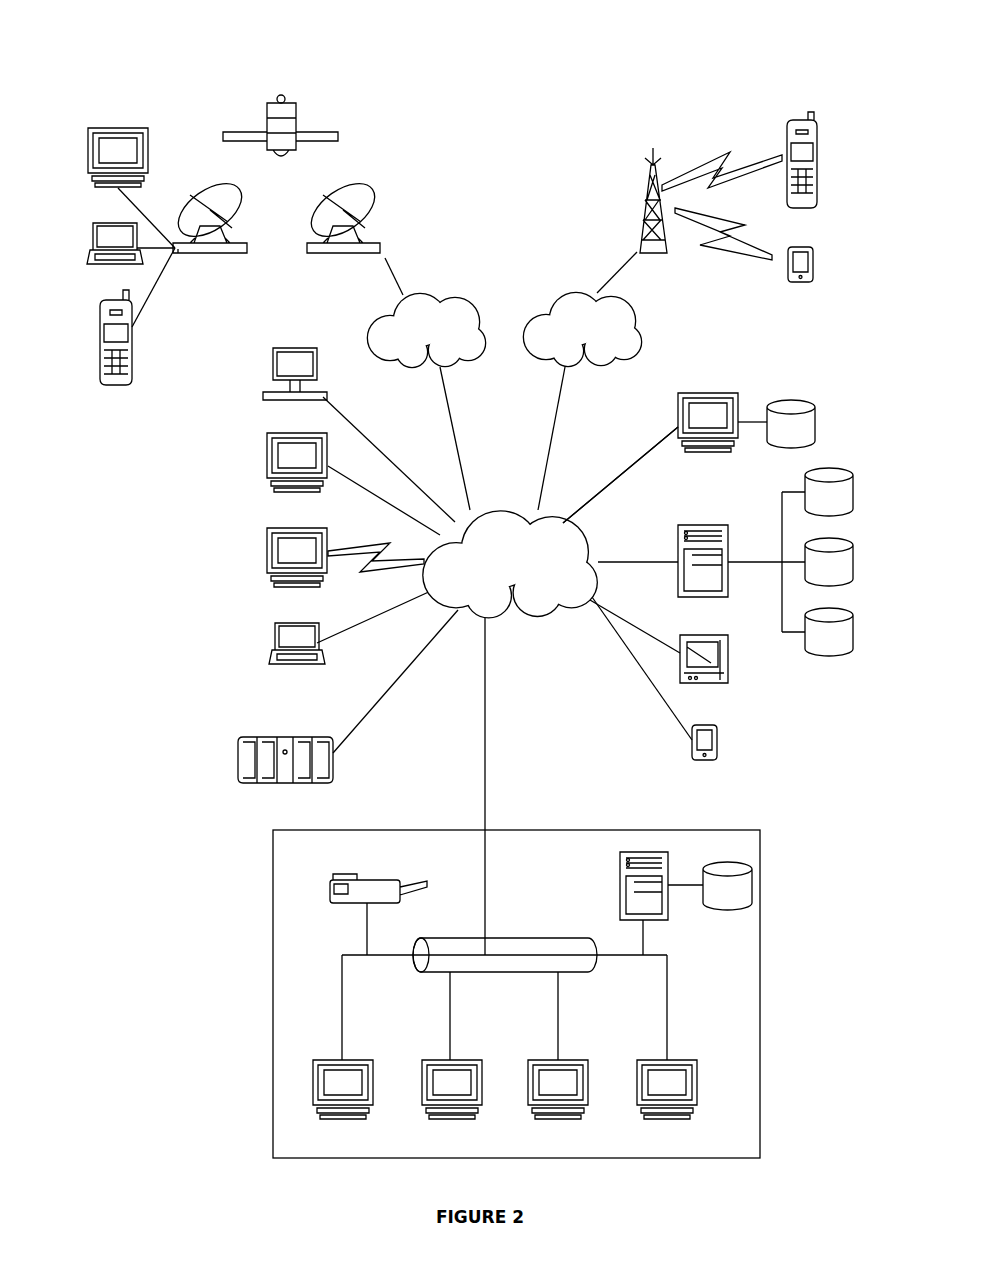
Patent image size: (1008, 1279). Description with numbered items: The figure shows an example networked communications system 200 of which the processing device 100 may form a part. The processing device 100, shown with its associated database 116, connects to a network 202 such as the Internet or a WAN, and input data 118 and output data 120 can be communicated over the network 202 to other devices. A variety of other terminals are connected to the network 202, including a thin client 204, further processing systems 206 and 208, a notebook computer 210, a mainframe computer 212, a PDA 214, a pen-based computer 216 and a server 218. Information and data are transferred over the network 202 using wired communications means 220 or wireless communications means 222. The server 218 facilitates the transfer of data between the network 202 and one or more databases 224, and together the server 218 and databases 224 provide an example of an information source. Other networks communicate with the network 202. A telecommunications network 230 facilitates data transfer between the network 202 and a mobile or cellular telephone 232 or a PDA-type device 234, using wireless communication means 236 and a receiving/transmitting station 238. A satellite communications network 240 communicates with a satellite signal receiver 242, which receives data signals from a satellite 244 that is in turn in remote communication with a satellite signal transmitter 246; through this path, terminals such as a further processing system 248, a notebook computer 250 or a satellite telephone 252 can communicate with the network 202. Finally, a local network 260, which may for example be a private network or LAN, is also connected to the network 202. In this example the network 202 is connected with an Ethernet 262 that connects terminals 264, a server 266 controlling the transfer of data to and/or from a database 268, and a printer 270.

The networked communications system 200 is at (543, 72).
The processing device 100 is at (707, 393).
The database 116 is at (791, 424).
The input data 118 is at (598, 460).
The output data 120 is at (598, 460).
The network 202 is at (504, 676).
The thin client 204 is at (262, 400).
The further processing system 206 is at (267, 470).
The further processing system 208 is at (267, 563).
The notebook computer 210 is at (275, 653).
The mainframe computer 212 is at (238, 758).
The PDA 214 is at (718, 747).
The pen-based computer 216 is at (728, 658).
The server 218 is at (692, 525).
The wired communications means 220 is at (384, 500).
The wireless communications means 222 is at (376, 569).
The databases 224 is at (817, 562).
The telecommunications network 230 is at (582, 381).
The mobile or cellular telephone 232 is at (818, 157).
The PDA-type device 234 is at (813, 268).
The wireless communication means 236 is at (722, 206).
The receiving/transmitting station 238 is at (640, 215).
The satellite communications network 240 is at (426, 384).
The satellite signal receiver 242 is at (378, 206).
The satellite 244 is at (323, 127).
The satellite signal transmitter 246 is at (200, 258).
The further processing system 248 is at (117, 127).
The notebook computer 250 is at (93, 246).
The satellite telephone 252 is at (113, 385).
The local network 260 is at (273, 925).
The Ethernet 262 is at (510, 938).
The terminals 264 is at (340, 1120).
The server 266 is at (615, 892).
The database 268 is at (727, 886).
The printer 270 is at (367, 873).